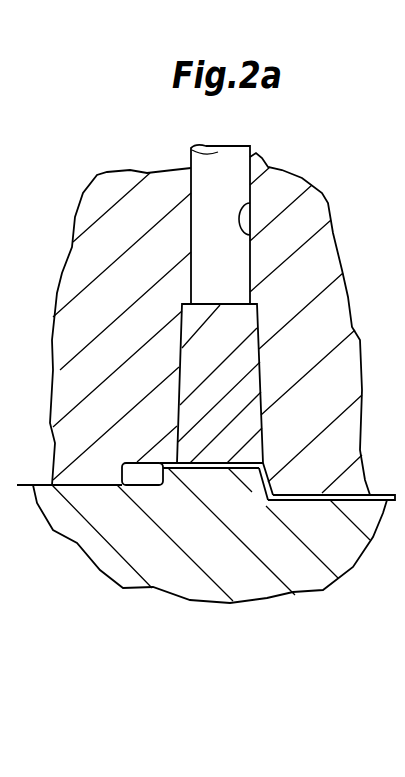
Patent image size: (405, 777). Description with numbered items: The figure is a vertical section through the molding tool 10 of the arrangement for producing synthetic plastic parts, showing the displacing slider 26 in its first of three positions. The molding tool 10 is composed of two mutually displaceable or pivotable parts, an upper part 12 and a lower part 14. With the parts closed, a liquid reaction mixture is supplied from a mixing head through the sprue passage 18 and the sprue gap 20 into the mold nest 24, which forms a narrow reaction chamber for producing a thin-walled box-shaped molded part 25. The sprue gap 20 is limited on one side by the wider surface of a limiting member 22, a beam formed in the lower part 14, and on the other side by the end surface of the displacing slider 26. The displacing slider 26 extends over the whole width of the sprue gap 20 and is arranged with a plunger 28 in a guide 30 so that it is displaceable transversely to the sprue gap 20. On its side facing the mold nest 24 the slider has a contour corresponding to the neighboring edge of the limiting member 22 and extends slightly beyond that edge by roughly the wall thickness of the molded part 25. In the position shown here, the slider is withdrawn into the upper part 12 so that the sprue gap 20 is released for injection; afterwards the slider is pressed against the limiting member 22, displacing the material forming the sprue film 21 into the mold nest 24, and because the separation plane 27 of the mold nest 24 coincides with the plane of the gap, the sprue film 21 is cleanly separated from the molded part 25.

The molding tool 10 is at (200, 571).
The upper part 12 is at (283, 193).
The lower part 14 is at (267, 598).
The sprue passage 18 is at (147, 477).
The sprue gap 20 is at (277, 493).
The sprue film 21 is at (220, 470).
The limiting member 22 is at (136, 527).
The mold nest 24 is at (331, 538).
The molded part 25 is at (333, 502).
The displacing slider 26 is at (223, 375).
The separation plane 27 is at (267, 458).
The plunger 28 is at (220, 267).
The guide 30 is at (252, 236).